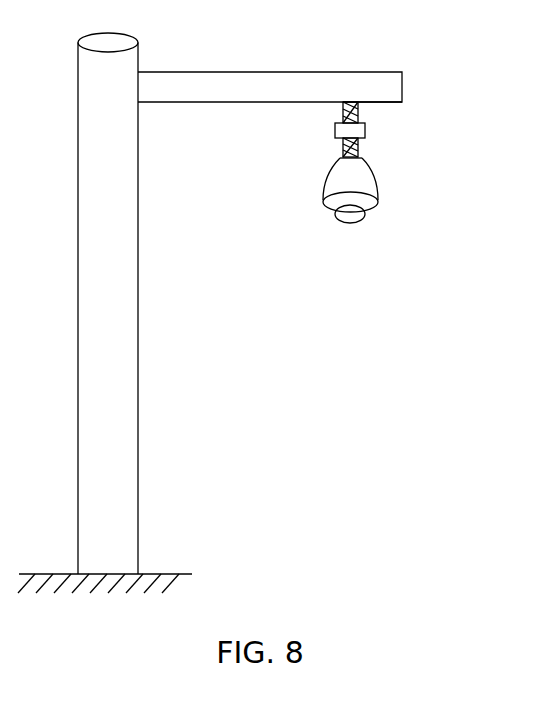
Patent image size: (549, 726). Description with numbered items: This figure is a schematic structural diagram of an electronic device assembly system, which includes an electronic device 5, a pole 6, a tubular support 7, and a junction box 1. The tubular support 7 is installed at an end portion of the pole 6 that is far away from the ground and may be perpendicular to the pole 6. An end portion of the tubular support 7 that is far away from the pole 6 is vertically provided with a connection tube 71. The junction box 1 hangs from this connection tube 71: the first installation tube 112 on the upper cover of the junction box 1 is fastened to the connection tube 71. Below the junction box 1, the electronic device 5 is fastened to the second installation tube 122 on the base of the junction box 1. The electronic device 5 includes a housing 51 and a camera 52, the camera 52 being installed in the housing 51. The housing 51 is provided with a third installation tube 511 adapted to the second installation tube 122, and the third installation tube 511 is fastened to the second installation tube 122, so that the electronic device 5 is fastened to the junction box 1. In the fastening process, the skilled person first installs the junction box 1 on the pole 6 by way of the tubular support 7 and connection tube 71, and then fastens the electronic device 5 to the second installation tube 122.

The junction box 1 is at (415, 103).
The first installation tube 112 is at (290, 127).
The second installation tube 122 is at (419, 161).
The electronic device 5 is at (300, 190).
The housing 51 is at (409, 202).
The third installation tube 511 is at (292, 166).
The camera 52 is at (415, 231).
The pole 6 is at (159, 292).
The tubular support 7 is at (270, 56).
The connection tube 71 is at (419, 66).